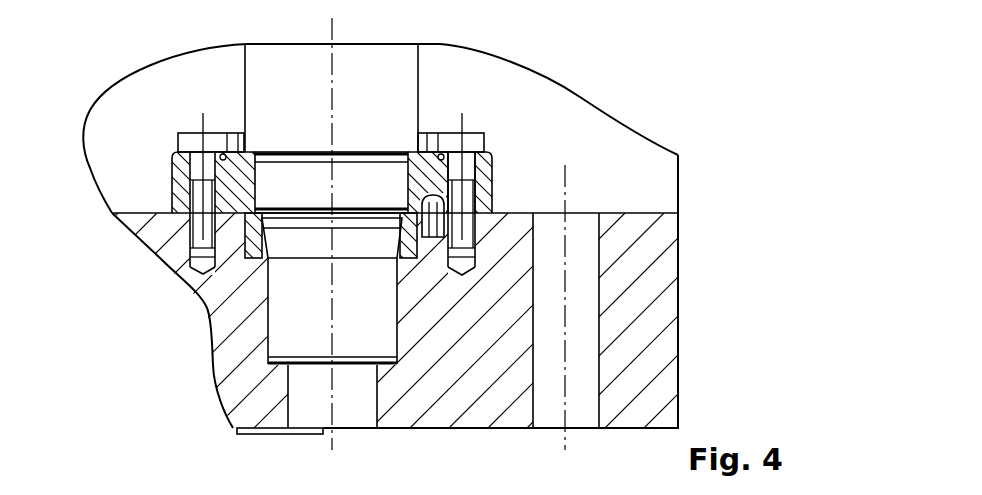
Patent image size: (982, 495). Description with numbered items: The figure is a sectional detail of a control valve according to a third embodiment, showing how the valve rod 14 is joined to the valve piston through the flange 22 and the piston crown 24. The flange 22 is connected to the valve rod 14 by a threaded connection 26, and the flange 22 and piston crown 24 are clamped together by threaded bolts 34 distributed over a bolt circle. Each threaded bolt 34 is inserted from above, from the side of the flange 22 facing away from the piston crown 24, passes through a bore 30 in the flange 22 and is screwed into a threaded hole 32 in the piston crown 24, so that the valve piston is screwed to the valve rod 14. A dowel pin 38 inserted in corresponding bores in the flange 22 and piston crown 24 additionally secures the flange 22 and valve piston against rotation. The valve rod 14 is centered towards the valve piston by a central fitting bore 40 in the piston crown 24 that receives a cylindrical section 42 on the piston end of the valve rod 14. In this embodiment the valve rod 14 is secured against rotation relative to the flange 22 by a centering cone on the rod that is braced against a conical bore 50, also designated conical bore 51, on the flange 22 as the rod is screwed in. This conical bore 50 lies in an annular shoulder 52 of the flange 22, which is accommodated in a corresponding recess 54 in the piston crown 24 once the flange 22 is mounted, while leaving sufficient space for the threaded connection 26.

The valve rod 14 is at (374, 63).
The flange 22 is at (172, 179).
The piston crown 24 is at (662, 297).
The threaded connection 26 is at (233, 148).
The bore 30 is at (470, 192).
The threaded hole 32 is at (480, 204).
The threaded bolt 34 is at (197, 238).
The dowel pin 38 is at (452, 182).
The central fitting bore 40 is at (265, 332).
The cylindrical section 42 is at (290, 322).
The conical bore 50 is at (388, 250).
The conical bore 51 is at (247, 253).
The annular shoulder 52 is at (262, 258).
The recess 54 is at (428, 243).